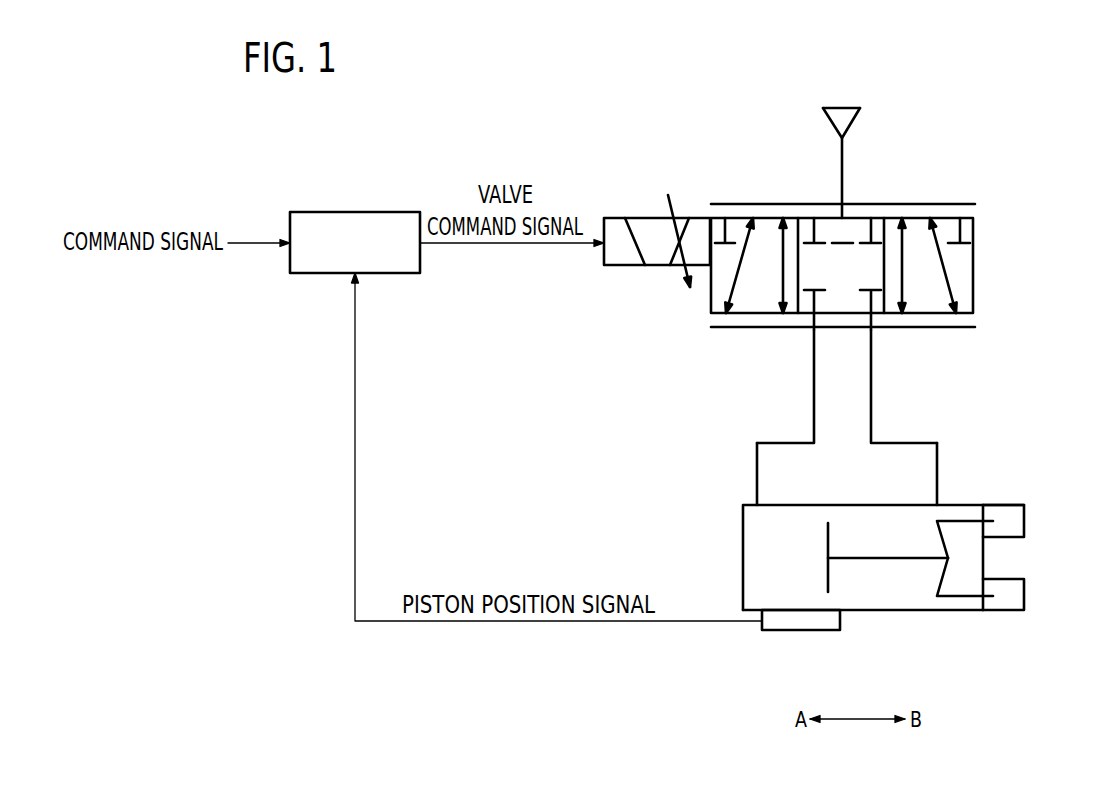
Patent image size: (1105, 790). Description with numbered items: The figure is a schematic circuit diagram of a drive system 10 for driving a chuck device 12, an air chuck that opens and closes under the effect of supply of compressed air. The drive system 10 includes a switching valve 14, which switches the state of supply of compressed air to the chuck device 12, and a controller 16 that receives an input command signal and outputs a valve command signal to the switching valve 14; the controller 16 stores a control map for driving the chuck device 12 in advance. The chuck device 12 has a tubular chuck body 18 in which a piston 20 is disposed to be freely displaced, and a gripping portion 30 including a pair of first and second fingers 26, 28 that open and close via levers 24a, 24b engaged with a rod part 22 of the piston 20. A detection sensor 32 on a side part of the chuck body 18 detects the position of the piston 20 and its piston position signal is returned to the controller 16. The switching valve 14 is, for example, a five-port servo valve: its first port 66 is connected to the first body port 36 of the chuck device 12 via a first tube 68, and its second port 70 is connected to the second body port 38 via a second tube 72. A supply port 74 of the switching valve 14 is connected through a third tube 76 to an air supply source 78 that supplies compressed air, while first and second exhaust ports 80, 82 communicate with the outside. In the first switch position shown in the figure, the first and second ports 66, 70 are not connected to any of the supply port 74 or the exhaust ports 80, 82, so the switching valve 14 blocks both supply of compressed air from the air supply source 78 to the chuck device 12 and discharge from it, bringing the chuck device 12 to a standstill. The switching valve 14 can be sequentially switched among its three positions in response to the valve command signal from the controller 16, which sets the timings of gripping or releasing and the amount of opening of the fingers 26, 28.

The drive system 10 is at (458, 134).
The chuck device 12 is at (953, 497).
The switching valve 14 is at (662, 289).
The controller 16 is at (353, 212).
The chuck body 18 is at (893, 611).
The piston 20 is at (828, 545).
The rod part 22 is at (843, 558).
The lever 24a is at (963, 522).
The lever 24b is at (963, 596).
The first finger 26 is at (1017, 523).
The second finger 28 is at (1018, 597).
The gripping portion 30 is at (1007, 617).
The detection sensor 32 is at (799, 631).
The first body port 36 is at (757, 504).
The second body port 38 is at (937, 504).
The first port 66 is at (813, 316).
The first tube 68 is at (813, 405).
The second port 70 is at (871, 316).
The second tube 72 is at (871, 405).
The supply port 74 is at (842, 218).
The third tube 76 is at (844, 153).
The air supply source 78 is at (838, 108).
The first exhaust port 80 is at (813, 218).
The second exhaust port 82 is at (871, 218).